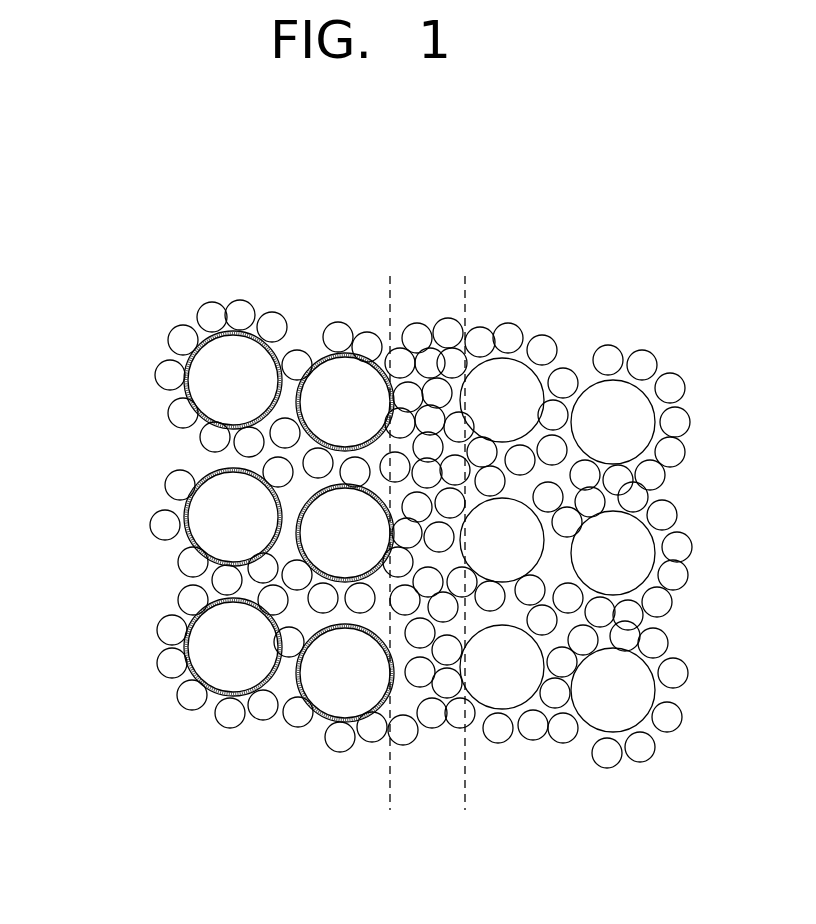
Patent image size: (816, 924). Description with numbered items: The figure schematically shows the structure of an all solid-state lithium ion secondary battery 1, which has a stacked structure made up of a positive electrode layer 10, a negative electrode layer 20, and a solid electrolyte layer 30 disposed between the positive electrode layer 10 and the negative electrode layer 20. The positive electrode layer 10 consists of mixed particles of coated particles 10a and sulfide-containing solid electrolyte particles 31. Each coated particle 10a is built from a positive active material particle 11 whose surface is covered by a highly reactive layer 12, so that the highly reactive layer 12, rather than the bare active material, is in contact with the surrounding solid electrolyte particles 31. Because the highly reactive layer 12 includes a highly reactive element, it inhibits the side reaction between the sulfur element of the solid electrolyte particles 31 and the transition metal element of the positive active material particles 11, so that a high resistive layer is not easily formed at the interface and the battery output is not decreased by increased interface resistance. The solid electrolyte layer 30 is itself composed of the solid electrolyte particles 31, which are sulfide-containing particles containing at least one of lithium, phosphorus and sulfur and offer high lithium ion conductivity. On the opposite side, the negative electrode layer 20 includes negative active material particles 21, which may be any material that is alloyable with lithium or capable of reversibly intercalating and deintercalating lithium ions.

The lithium ion secondary battery 1 is at (662, 300).
The positive electrode layer 10 is at (162, 818).
The coated particle 10a is at (262, 262).
The positive active material particle 11 is at (318, 395).
The highly reactive layer 12 is at (317, 345).
The negative electrode layer 20 is at (697, 818).
The negative active material particle 21 is at (591, 730).
The solid electrolyte layer 30 is at (467, 274).
The solid electrolyte particle 31 is at (349, 326).